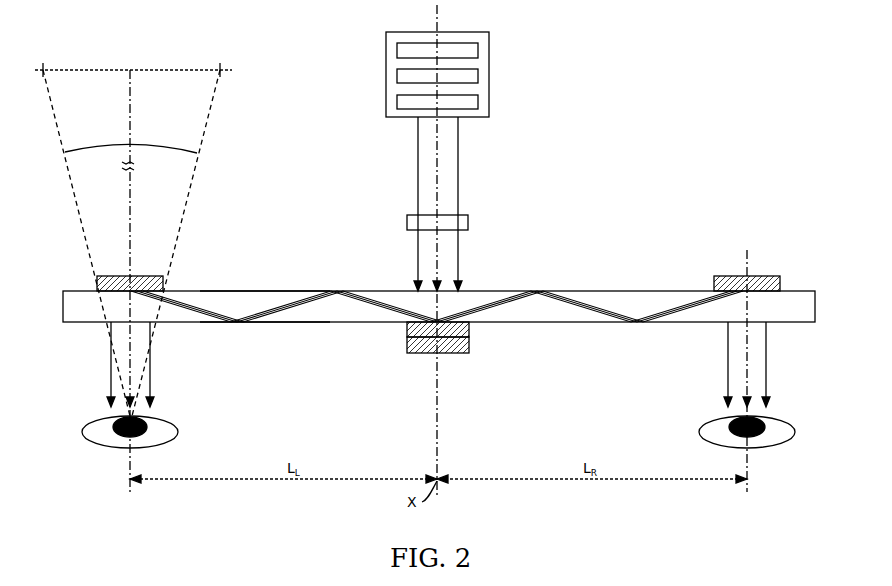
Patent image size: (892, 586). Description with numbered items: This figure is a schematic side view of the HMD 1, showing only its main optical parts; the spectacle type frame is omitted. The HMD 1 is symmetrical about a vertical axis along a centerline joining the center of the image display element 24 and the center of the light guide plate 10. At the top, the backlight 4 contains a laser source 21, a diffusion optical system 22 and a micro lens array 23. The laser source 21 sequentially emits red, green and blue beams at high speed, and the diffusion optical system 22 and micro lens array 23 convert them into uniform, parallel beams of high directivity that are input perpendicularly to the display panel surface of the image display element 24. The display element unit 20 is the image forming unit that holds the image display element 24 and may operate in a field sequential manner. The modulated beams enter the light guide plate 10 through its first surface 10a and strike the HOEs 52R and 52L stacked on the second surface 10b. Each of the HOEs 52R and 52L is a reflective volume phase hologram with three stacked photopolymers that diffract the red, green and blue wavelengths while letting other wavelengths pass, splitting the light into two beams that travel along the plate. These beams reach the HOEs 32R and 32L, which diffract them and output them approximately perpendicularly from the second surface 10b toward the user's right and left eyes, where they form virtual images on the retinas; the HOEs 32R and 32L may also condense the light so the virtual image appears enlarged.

The HMD 1 is at (167, 70).
The backlight 4 is at (433, 70).
The laser source 21 is at (397, 50).
The diffusion optical system 22 is at (397, 76).
The micro lens array 23 is at (397, 100).
The display element unit 20 is at (472, 223).
The image display element 24 is at (468, 222).
The light guide plate 10 is at (63, 304).
The first surface 10a is at (263, 291).
The second surface 10b is at (300, 322).
The HOE 32L is at (112, 276).
The HOE 32R is at (728, 276).
The HOE 52L is at (462, 352).
The HOE 52R is at (420, 334).